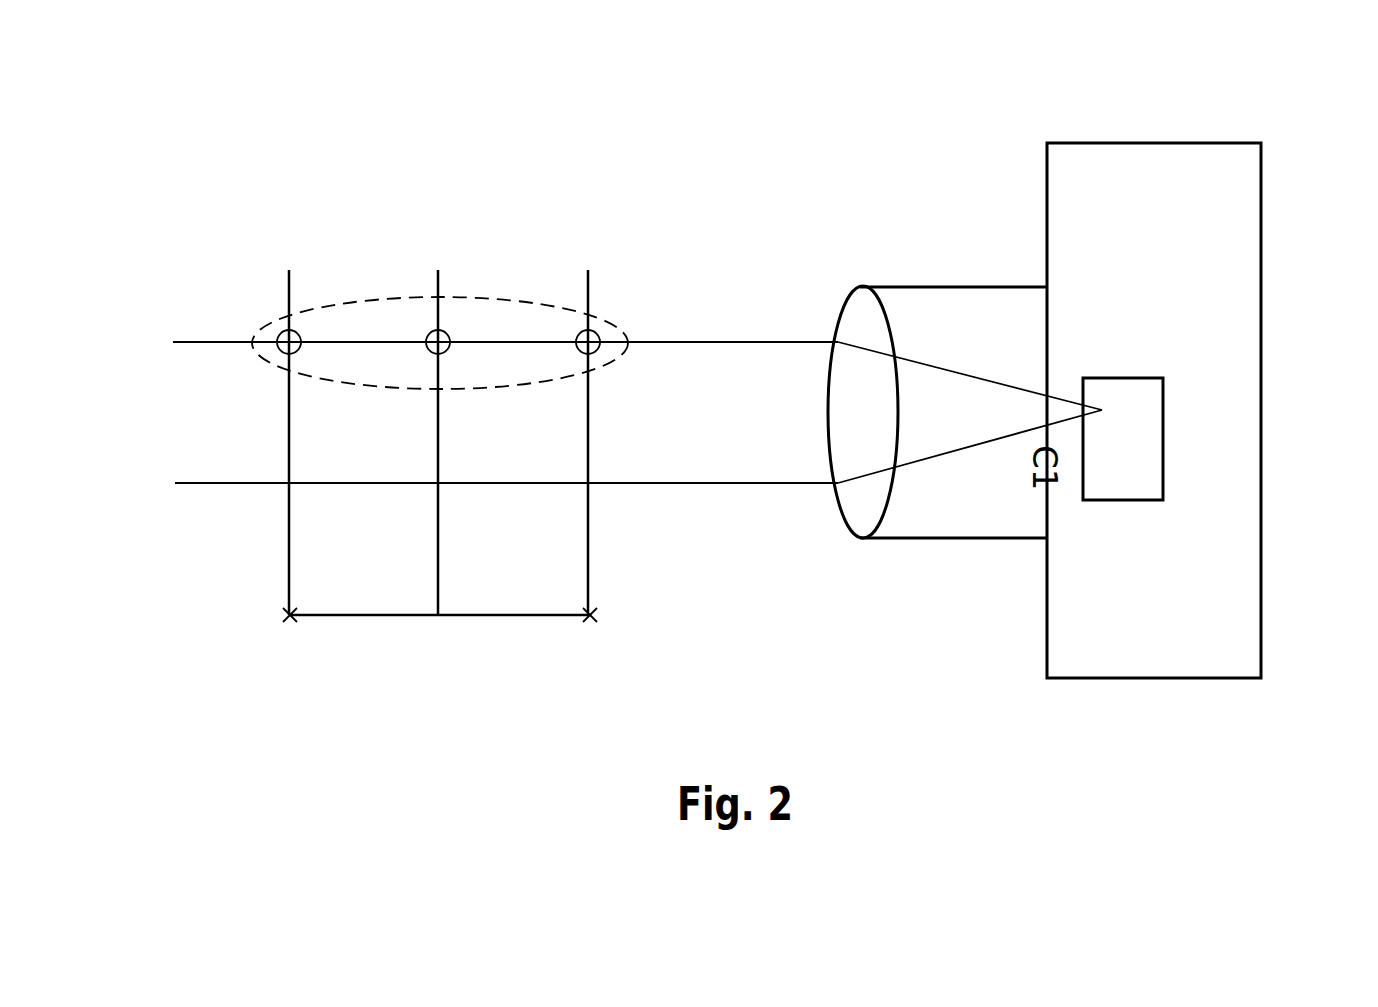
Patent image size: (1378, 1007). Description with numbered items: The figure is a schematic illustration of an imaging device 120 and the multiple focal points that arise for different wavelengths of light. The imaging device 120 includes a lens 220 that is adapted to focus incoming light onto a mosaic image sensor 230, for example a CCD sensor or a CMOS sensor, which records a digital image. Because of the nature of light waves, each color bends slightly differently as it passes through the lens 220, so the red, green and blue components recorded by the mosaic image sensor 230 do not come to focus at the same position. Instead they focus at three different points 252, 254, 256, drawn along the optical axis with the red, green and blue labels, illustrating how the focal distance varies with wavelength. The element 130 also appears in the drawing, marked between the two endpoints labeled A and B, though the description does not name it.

The imaging device 120 is at (1259, 172).
The calibration object / pattern 130 is at (483, 617).
The lens 220 is at (862, 503).
The mosaic image sensor 230 is at (1163, 462).
The focal point 252 is at (289, 298).
The focal point 254 is at (438, 283).
The focal point 256 is at (588, 298).